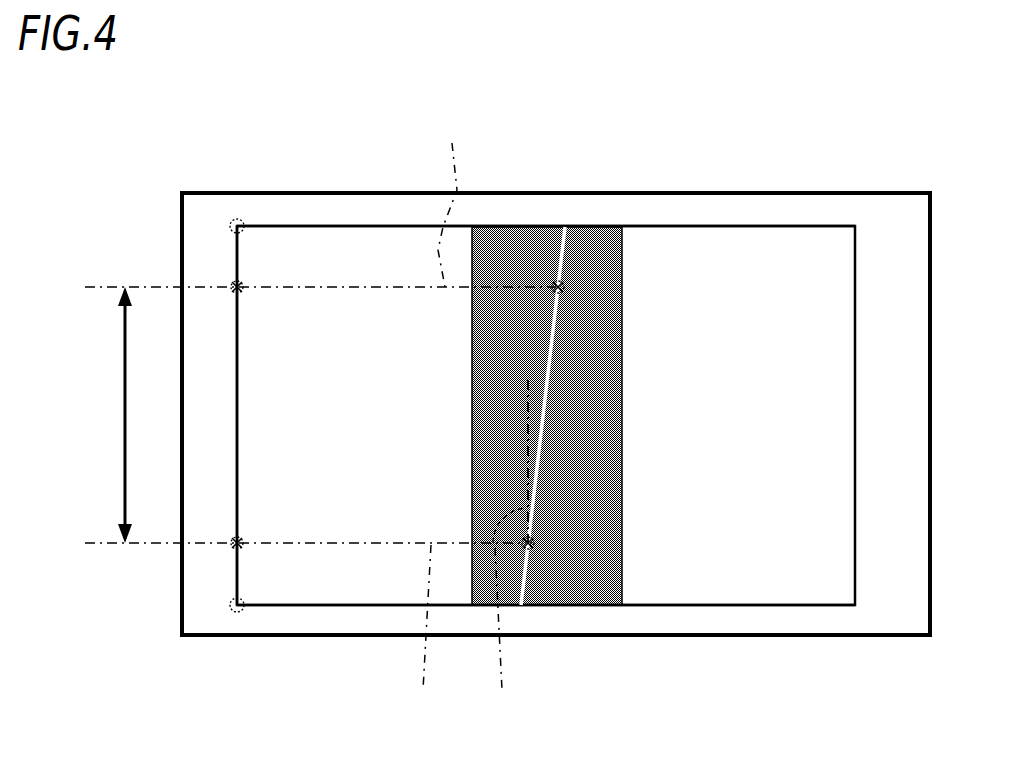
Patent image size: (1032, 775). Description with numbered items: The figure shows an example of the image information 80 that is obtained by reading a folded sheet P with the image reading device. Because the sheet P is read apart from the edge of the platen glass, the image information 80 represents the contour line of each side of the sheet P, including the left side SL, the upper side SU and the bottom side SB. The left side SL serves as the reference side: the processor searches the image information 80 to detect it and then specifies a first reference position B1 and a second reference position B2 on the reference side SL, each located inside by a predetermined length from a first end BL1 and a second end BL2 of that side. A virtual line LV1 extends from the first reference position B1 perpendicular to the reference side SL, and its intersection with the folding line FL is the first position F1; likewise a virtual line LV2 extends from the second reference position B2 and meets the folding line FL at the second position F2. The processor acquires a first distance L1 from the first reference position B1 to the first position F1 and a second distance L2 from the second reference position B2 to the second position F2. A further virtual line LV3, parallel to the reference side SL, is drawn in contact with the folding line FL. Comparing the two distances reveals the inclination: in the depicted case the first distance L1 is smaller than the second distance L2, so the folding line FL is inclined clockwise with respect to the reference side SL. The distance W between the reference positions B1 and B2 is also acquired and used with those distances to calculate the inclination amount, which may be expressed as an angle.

The image information 80 is at (408, 193).
The sheet P is at (835, 227).
The upper side of sheet SU is at (308, 226).
The bottom side of sheet SB is at (362, 605).
The left side of sheet SL is at (237, 455).
The first distance L1 is at (308, 527).
The second distance L2 is at (322, 272).
The distance between first and second reference positions W is at (110, 415).
The first reference position B1 is at (237, 549).
The second reference position B2 is at (237, 287).
The first end of reference side BL1 is at (237, 612).
The second end of reference side BL2 is at (236, 219).
The virtual line LV1 is at (428, 634).
The virtual line LV2 is at (460, 201).
The virtual line LV3 is at (497, 632).
The folding line FL is at (557, 347).
The first position F1 is at (530, 545).
The second position F2 is at (558, 287).